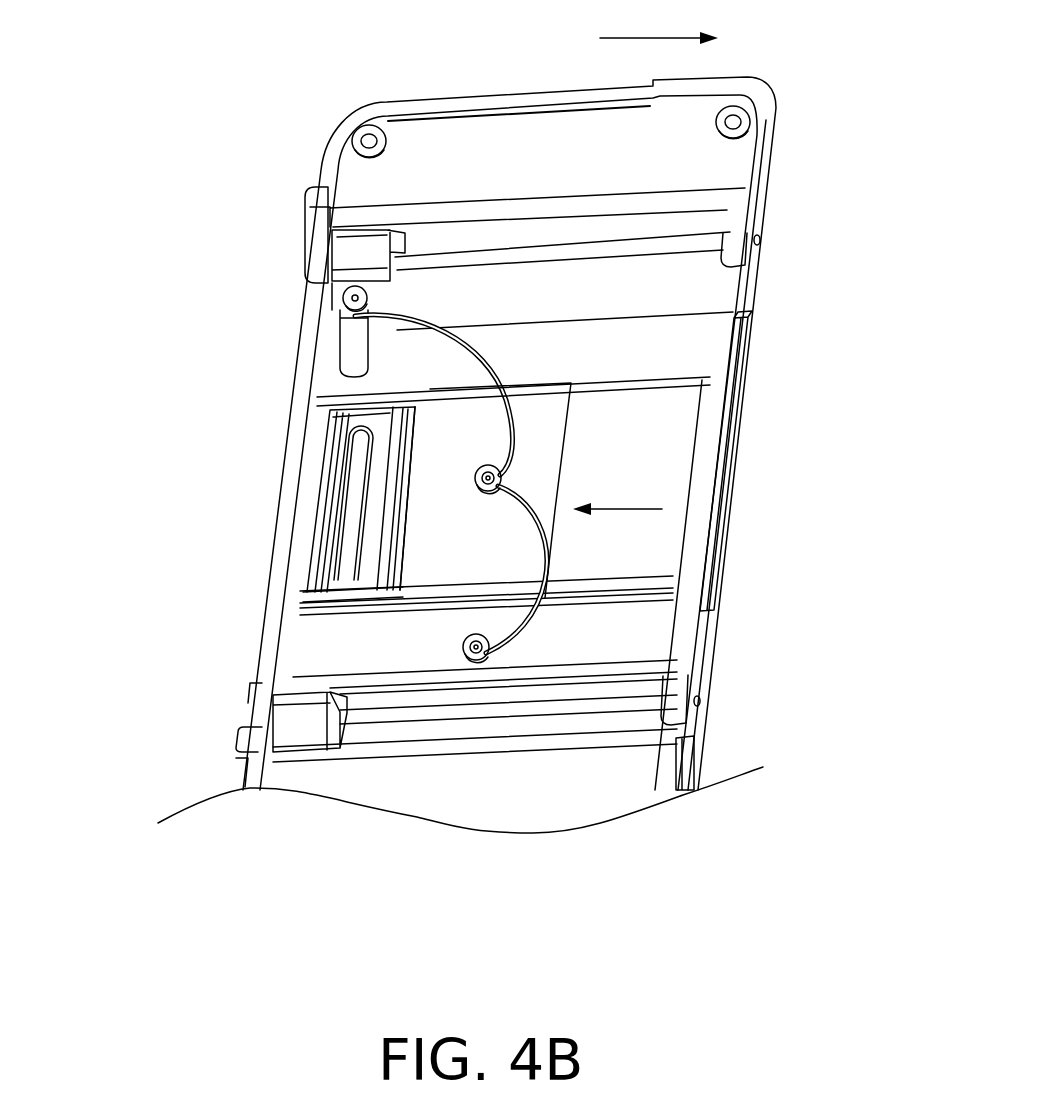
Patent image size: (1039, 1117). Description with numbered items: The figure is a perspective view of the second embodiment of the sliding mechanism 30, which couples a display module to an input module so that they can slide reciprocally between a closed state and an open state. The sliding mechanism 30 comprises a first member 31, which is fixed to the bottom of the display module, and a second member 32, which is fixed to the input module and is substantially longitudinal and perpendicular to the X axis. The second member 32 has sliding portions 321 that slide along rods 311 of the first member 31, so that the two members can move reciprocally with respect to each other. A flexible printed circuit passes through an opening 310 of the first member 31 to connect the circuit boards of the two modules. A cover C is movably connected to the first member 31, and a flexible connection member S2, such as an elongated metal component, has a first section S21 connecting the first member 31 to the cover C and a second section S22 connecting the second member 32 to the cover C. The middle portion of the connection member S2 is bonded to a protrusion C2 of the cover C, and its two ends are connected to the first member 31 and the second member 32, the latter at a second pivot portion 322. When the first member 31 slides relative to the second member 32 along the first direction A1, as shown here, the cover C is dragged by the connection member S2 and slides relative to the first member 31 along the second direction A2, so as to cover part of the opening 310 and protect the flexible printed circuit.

The sliding mechanism 30 is at (63, 93).
The first member 31 is at (782, 103).
The rods 311 is at (668, 243).
The second member 32 is at (312, 560).
The opening 310 is at (380, 581).
The sliding portions 321 is at (348, 250).
The second pivot portion 322 is at (336, 288).
The flexible connection member S2 is at (157, 302).
The first section S21 is at (430, 533).
The second section S22 is at (457, 343).
The cover C is at (537, 433).
The protrusion C2 is at (503, 467).
The first direction A1 is at (659, 22).
The second direction A2 is at (617, 494).